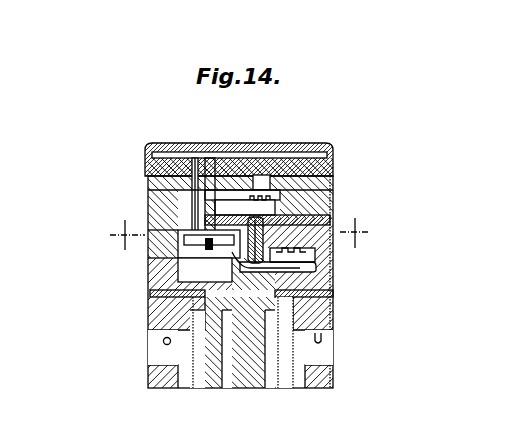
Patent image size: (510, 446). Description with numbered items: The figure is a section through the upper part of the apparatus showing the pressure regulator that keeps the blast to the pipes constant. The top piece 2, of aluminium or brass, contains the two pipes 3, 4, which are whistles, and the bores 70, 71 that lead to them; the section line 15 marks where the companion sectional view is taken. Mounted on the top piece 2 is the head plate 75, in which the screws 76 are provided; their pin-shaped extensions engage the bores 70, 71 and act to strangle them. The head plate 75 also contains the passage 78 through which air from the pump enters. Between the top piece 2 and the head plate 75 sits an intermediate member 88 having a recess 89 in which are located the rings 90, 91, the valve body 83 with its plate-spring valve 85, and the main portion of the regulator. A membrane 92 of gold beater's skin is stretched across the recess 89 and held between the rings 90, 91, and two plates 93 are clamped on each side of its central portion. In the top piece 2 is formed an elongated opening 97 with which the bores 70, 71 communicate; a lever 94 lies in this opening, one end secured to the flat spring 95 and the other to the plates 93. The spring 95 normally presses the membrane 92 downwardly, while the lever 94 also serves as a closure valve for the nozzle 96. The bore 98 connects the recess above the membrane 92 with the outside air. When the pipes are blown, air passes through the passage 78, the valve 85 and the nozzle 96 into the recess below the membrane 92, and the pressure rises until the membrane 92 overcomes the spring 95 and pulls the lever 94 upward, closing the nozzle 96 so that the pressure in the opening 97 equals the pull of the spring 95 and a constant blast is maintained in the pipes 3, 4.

The top piece 2 is at (262, 377).
The pipe 3 is at (202, 377).
The pipe 4 is at (286, 377).
The piston 15 is at (234, 234).
The bore 70 is at (183, 334).
The bore 71 is at (338, 315).
The head plate 75 is at (335, 165).
The screws 76 is at (165, 300).
The passage 78 is at (266, 165).
The valve body 83 is at (300, 165).
The valve 85 is at (241, 165).
The intermediate member 88 is at (335, 200).
The recess 89 is at (176, 165).
The ring 90 is at (148, 222).
The ring 91 is at (170, 255).
The membrane 92 is at (148, 232).
The plates 93 is at (176, 268).
The lever 94 is at (258, 266).
The spring 95 is at (335, 262).
The nozzle 96 is at (335, 248).
The elongated opening 97 is at (180, 285).
The bore 98 is at (199, 165).